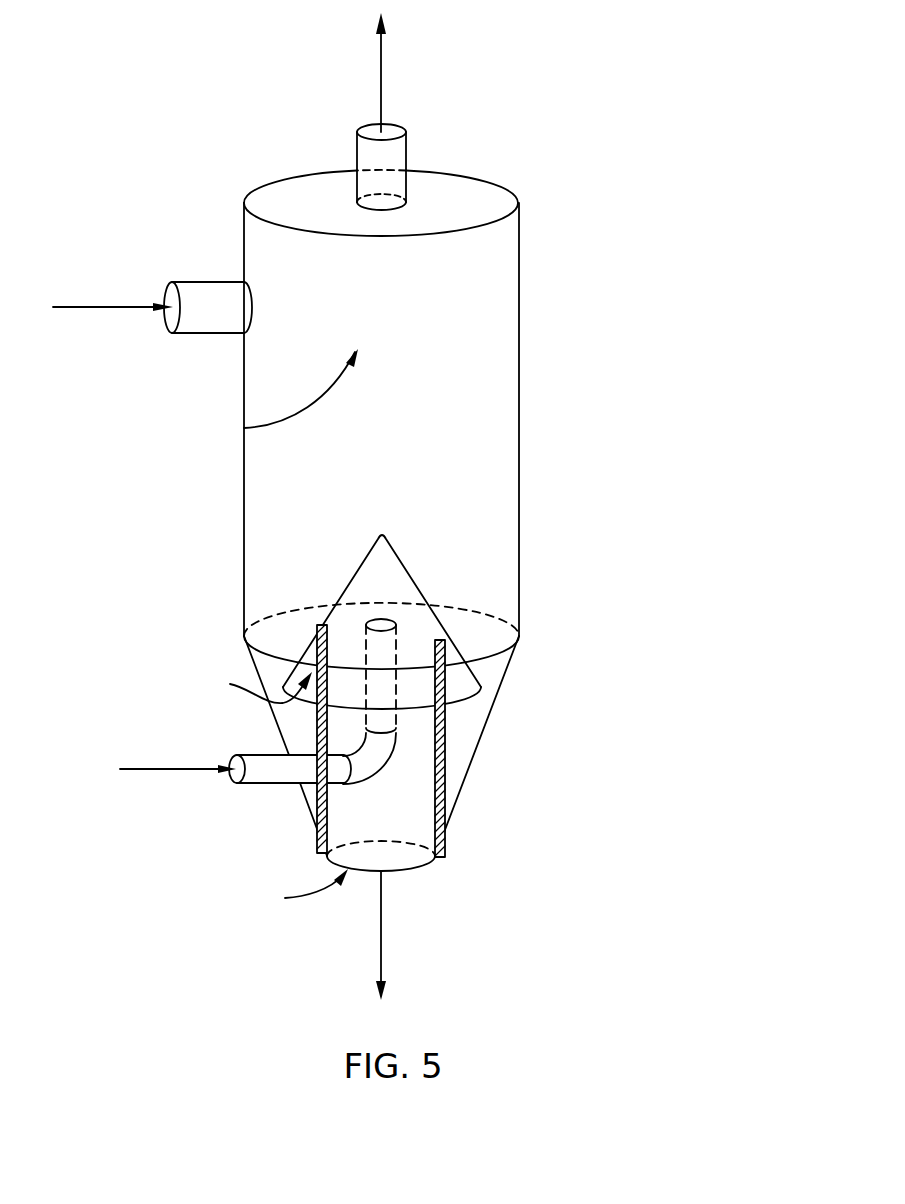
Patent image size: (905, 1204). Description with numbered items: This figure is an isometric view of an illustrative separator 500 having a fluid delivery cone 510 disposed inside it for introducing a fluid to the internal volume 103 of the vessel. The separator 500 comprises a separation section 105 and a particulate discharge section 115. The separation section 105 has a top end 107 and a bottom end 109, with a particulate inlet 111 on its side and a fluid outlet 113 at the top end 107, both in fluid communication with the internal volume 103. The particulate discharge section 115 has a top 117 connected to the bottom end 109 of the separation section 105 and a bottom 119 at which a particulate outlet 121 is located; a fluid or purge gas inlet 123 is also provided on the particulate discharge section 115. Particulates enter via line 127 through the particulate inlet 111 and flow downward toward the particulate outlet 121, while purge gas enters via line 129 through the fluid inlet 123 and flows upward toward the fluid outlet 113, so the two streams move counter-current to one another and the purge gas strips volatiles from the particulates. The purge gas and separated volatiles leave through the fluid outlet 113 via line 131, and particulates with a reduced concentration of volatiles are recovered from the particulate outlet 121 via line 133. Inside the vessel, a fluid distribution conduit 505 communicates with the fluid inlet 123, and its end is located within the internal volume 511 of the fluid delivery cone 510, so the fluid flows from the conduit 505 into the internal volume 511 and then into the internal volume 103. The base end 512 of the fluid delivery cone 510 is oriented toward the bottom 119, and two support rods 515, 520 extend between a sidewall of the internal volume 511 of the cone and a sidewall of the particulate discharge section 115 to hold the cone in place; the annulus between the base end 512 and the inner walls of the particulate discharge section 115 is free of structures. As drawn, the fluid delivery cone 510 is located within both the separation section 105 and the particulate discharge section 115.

The separator 500 is at (133, 42).
The internal volume 103 is at (244, 428).
The separation section 105 is at (519, 346).
The top end 107 is at (286, 178).
The bottom end 109 is at (517, 627).
The particulate inlet 111 is at (202, 282).
The fluid outlet 113 is at (407, 150).
The particulate discharge section 115 is at (478, 750).
The top 117 is at (470, 661).
The bottom 119 is at (417, 870).
The particulate outlet 121 is at (295, 889).
The fluid inlet 123 is at (260, 758).
The line 127 is at (92, 308).
The line 129 is at (131, 773).
The line 131 is at (382, 67).
The line 133 is at (382, 948).
The fluid distribution conduit 505 is at (363, 767).
The fluid delivery cone 510 is at (410, 567).
The internal volume 511 is at (230, 684).
The base end 512 is at (468, 698).
The support rod 515 is at (317, 815).
The support rod 520 is at (445, 803).